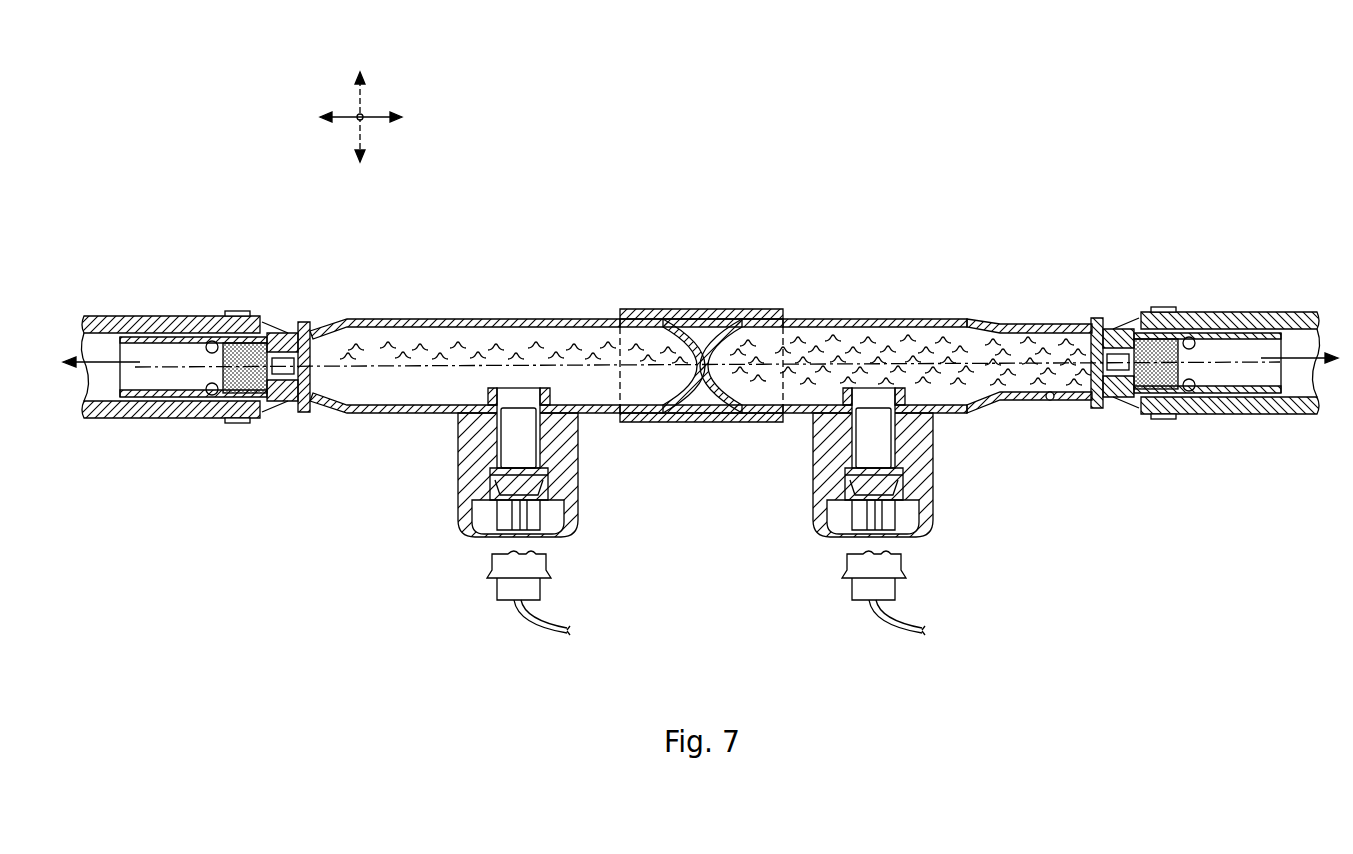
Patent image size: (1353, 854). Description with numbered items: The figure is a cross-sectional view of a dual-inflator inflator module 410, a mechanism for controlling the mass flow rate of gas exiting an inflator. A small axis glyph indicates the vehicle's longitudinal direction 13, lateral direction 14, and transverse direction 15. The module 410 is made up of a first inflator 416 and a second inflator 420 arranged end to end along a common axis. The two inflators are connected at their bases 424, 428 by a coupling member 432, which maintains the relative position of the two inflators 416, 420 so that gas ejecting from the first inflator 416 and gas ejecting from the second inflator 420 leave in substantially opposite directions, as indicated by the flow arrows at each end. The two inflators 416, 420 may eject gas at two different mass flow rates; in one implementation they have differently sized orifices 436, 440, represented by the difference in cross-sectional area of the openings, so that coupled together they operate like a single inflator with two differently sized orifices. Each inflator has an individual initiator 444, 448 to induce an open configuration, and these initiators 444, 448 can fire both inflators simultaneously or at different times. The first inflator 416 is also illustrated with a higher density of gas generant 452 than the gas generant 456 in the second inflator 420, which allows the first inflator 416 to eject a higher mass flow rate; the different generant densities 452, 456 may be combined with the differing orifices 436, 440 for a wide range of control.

The longitudinal direction 13 is at (383, 120).
The lateral direction 14 is at (358, 124).
The transverse direction 15 is at (362, 100).
The inflator module 410 is at (792, 224).
The first inflator 416 is at (985, 325).
The second inflator 420 is at (433, 318).
The base 424 is at (712, 318).
The base 428 is at (693, 318).
The coupling member 432 is at (705, 425).
The orifice 436 is at (1123, 325).
The orifice 440 is at (278, 328).
The initiator 444 is at (932, 546).
The initiator 448 is at (450, 542).
The gas generant 452 is at (877, 332).
The gas generant 456 is at (490, 345).